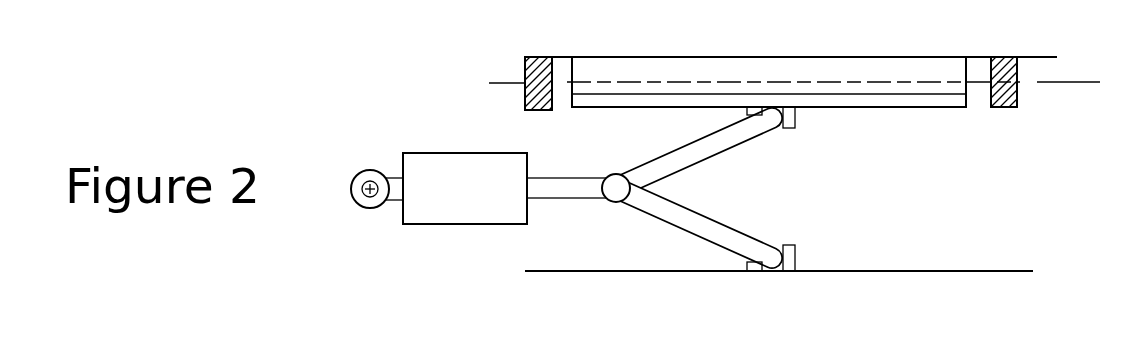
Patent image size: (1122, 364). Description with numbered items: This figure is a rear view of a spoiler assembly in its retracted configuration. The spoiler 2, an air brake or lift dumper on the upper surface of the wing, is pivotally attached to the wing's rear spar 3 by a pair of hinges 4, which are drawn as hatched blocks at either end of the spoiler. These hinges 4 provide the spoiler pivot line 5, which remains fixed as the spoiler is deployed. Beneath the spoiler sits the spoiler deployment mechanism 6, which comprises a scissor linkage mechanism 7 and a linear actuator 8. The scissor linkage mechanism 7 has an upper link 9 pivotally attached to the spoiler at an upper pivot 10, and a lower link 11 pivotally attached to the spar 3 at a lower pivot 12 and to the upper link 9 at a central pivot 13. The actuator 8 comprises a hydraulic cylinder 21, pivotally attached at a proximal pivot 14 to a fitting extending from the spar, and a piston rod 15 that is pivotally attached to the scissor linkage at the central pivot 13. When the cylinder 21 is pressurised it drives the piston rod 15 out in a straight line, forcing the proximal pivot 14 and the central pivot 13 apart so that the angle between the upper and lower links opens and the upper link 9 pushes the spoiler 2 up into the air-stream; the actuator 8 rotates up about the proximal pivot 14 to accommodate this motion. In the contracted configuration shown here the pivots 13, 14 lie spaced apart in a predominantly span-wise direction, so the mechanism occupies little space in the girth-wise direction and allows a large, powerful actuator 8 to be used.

The spoiler 2 is at (698, 57).
The rear spar 3 is at (931, 261).
The hinges 4 is at (539, 57).
The spoiler pivot line 5 is at (1066, 82).
The spoiler deployment mechanism 6 is at (442, 255).
The scissor linkage mechanism 7 is at (766, 188).
The linear actuator 8 is at (473, 136).
The upper link 9 is at (673, 153).
The upper pivot 10 is at (773, 126).
The lower link 11 is at (673, 226).
The lower pivot 12 is at (758, 247).
The central pivot 13 is at (614, 174).
The proximal pivot 14 is at (354, 205).
The piston rod 15 is at (562, 178).
The hydraulic cylinder 21 is at (418, 160).